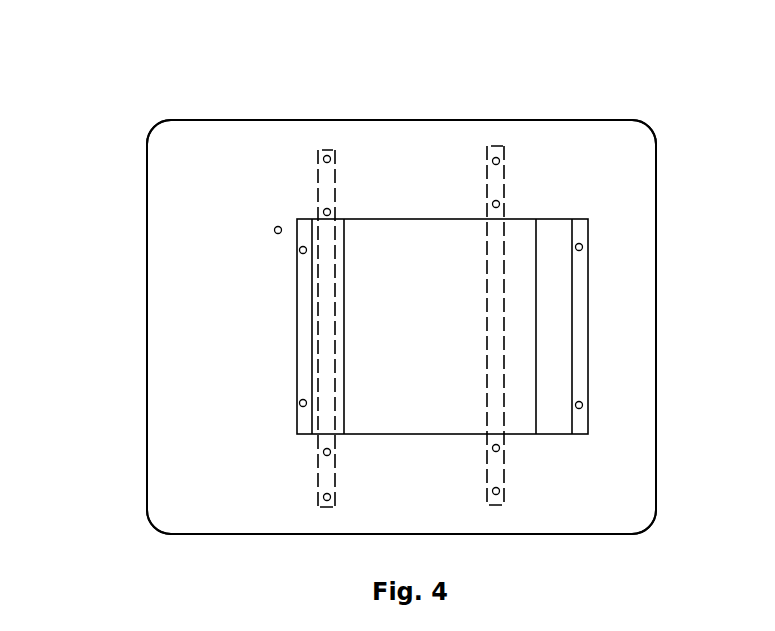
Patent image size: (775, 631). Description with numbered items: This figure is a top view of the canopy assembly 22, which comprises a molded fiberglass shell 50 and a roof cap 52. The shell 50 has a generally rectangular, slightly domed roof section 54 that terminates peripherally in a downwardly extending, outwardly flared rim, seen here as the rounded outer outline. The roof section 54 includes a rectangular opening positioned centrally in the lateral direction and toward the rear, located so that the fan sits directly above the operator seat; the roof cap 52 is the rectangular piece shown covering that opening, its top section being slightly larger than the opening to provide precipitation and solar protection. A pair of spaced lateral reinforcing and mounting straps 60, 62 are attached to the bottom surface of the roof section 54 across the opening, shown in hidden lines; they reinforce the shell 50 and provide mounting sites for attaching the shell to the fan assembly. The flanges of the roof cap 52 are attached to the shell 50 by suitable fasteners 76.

The canopy assembly 22 is at (401, 306).
The molded fiberglass shell 50 is at (147, 187).
The roof cap 52 is at (424, 218).
The roof section 54 is at (576, 135).
The frontal strap 60 is at (318, 503).
The rear strap 62 is at (502, 506).
The fasteners 76 is at (583, 404).